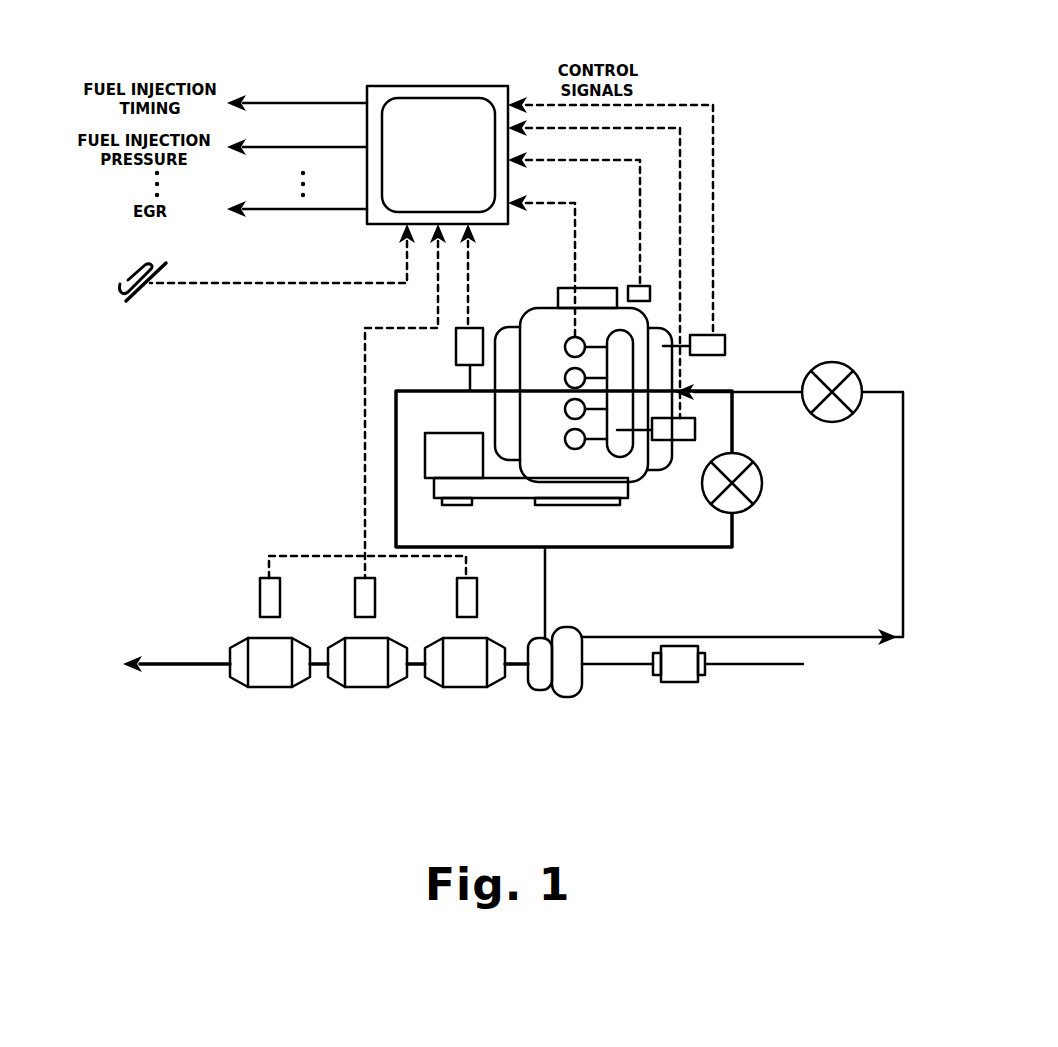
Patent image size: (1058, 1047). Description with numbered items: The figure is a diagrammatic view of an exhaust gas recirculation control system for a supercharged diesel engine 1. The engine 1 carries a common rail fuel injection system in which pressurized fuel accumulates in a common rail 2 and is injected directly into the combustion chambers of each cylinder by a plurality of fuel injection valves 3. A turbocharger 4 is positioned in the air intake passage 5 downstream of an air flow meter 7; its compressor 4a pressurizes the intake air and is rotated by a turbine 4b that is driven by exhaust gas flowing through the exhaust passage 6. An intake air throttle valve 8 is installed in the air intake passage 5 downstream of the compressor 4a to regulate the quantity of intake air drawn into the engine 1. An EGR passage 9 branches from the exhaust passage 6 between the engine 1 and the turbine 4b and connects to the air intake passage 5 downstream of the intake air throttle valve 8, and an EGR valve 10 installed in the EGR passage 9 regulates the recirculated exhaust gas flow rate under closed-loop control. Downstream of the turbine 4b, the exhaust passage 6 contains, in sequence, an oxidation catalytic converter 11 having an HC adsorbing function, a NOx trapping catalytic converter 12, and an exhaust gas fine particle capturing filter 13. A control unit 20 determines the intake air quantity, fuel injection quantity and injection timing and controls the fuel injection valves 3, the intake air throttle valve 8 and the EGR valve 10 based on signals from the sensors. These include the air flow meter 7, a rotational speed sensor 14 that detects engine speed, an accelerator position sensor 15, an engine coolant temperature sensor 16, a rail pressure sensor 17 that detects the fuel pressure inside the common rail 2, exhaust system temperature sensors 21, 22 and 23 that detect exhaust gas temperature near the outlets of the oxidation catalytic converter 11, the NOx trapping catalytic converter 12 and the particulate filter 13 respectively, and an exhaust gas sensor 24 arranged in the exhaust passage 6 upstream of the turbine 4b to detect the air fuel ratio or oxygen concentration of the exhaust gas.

The engine 1 is at (648, 467).
The common rail 2 is at (613, 458).
The fuel injection valves 3 is at (565, 440).
The turbocharger 4 is at (554, 718).
The compressor 4a is at (565, 697).
The turbine 4b is at (540, 690).
The air intake passage 5 is at (783, 665).
The exhaust passage 6 is at (548, 590).
The air flow meter 7 is at (685, 682).
The intake air throttle valve 8 is at (833, 422).
The EGR passage 9 is at (690, 547).
The EGR valve 10 is at (737, 513).
The oxidation catalytic converter 11 is at (468, 687).
The NOx trapping catalytic converter 12 is at (367, 687).
The exhaust gas fine particle capturing filter 13 is at (273, 687).
The rotational speed sensor 14 is at (646, 286).
The accelerator position sensor 15 is at (137, 290).
The engine coolant temperature sensor 16 is at (725, 335).
The rail pressure sensor 17 is at (695, 432).
The control unit 20 is at (423, 86).
The exhaust system temperature sensor 21 is at (477, 595).
The exhaust system temperature sensor 22 is at (375, 595).
The exhaust system temperature sensor 23 is at (280, 595).
The exhaust gas sensor 24 is at (456, 345).